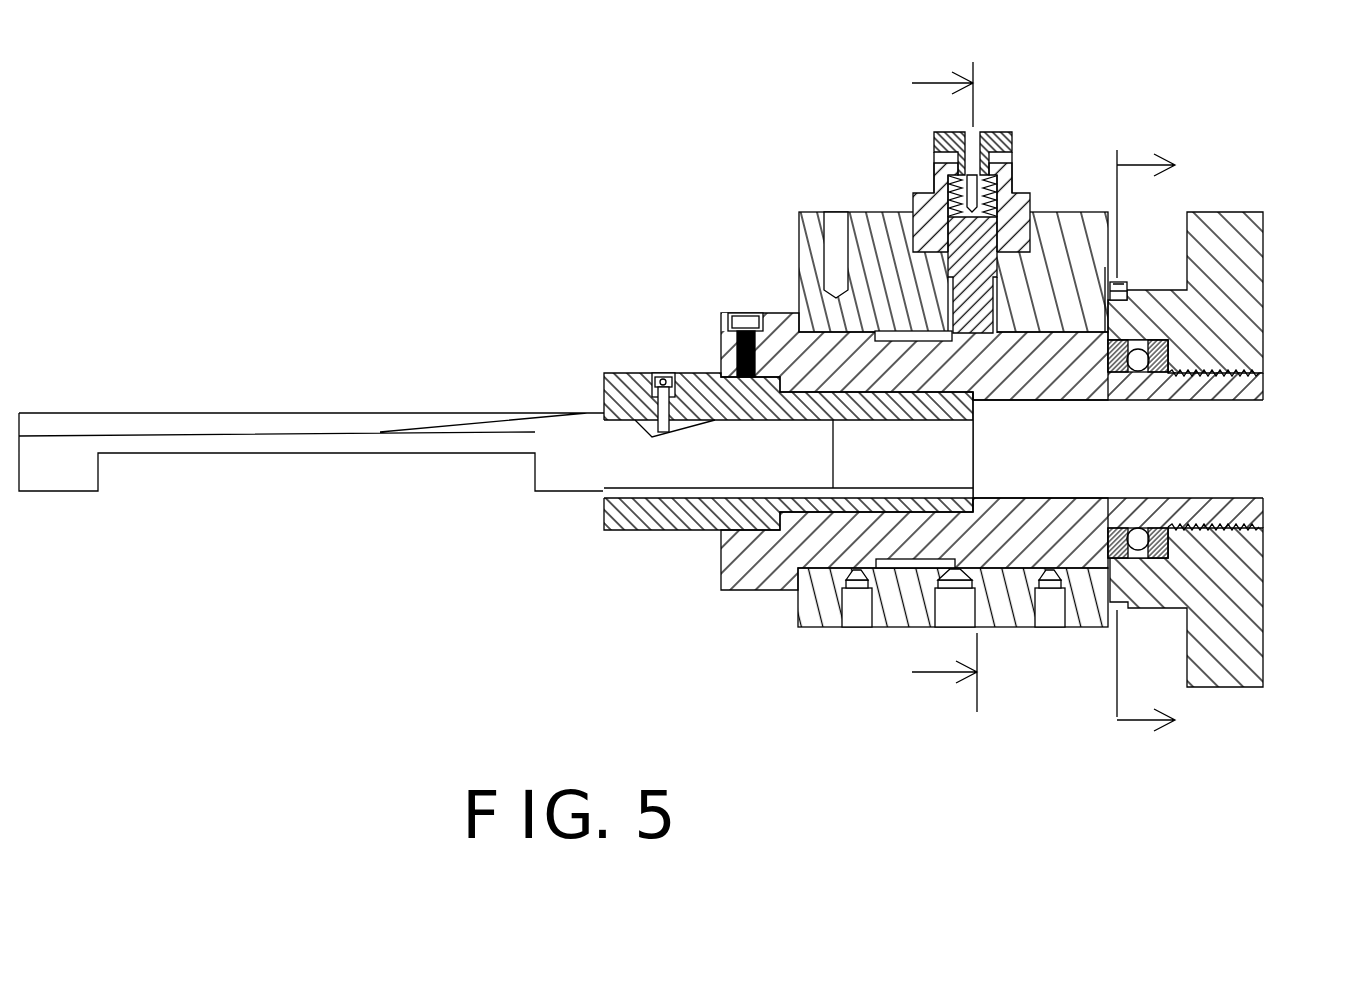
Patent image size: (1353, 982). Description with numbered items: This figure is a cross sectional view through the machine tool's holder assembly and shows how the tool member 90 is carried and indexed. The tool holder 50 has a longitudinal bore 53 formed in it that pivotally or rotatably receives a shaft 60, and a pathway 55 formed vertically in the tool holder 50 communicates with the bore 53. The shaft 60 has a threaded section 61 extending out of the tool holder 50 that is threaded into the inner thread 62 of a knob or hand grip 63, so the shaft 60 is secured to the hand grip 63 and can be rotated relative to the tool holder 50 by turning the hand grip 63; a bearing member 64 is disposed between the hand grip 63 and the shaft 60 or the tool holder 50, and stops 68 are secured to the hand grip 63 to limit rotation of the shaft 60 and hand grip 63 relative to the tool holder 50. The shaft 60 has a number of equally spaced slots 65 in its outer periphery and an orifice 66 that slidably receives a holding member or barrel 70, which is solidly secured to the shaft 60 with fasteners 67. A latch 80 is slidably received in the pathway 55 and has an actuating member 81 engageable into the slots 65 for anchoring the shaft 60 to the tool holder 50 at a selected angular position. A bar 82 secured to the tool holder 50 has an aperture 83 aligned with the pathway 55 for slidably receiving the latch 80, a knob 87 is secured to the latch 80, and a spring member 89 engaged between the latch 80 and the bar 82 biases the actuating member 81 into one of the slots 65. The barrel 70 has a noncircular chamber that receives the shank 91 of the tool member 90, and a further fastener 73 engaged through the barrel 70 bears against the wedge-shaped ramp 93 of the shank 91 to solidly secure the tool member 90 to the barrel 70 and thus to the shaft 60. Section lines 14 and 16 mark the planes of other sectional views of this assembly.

The section line 14- 14 is at (936, 394).
The section line 16- 16 is at (1144, 445).
The tool holder 50 is at (878, 223).
The longitudinal bore 53 is at (1001, 625).
The pathway 55 is at (958, 310).
The shaft 60 is at (790, 343).
The threaded section 61 is at (1257, 513).
The inner thread 62 is at (1213, 527).
The hand grip 63 is at (1246, 307).
The bearing member 64 is at (1140, 350).
The slots 65 is at (928, 560).
The orifice 66 is at (1190, 405).
The fasteners 67 is at (745, 333).
The stops 68 is at (1118, 283).
The barrel 70 is at (618, 378).
The fastener 73 is at (665, 375).
The latch 80 is at (947, 232).
The actuating member 81 is at (1000, 318).
The bar 82 is at (985, 325).
The aperture 83 is at (997, 230).
The knob 87 is at (983, 133).
The spring member 89 is at (962, 247).
The tool member 90 is at (185, 433).
The shank 91 is at (748, 465).
The ramp 93 is at (655, 432).